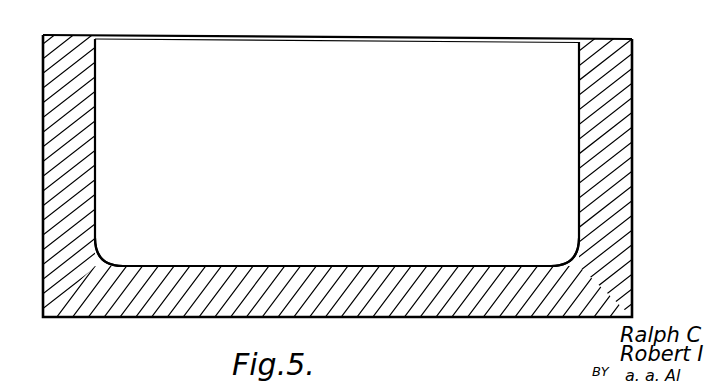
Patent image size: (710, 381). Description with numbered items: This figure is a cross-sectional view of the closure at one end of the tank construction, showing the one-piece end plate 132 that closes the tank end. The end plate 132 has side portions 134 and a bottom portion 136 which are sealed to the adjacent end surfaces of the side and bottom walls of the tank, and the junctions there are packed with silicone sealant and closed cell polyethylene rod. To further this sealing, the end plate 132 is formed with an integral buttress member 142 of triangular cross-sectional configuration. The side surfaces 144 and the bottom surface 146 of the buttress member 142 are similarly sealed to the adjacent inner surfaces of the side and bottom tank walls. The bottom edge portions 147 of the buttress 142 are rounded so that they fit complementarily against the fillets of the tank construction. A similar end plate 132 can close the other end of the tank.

The end plate 132 is at (60, 88).
The side portions of the end plate 134 is at (88, 164).
The bottom portion of the end plate 136 is at (180, 304).
The buttress member 142 is at (563, 51).
The side surfaces of the buttress member 144 is at (581, 204).
The bottom surface of the buttress member 146 is at (436, 270).
The bottom edge portions of the end plate buttress 147 is at (100, 264).